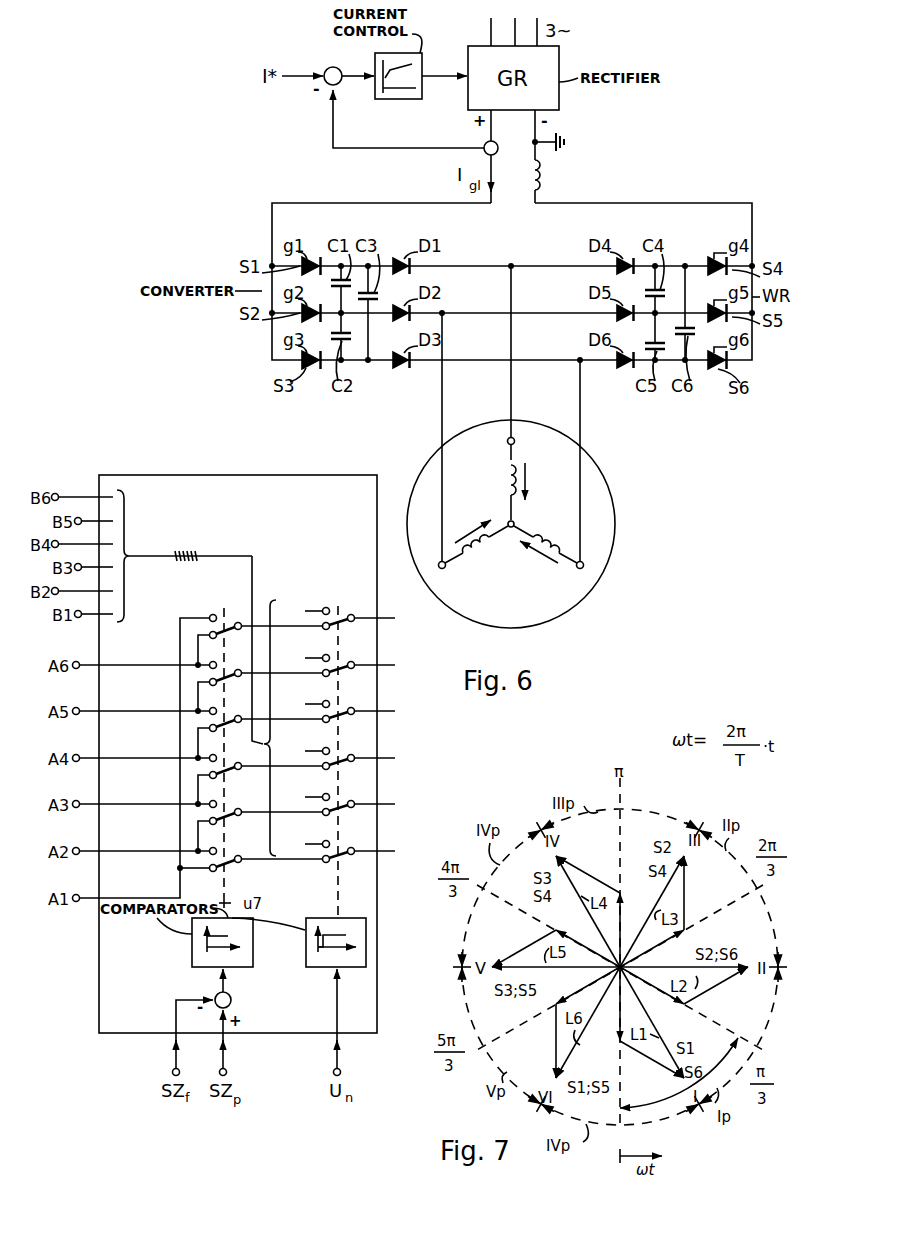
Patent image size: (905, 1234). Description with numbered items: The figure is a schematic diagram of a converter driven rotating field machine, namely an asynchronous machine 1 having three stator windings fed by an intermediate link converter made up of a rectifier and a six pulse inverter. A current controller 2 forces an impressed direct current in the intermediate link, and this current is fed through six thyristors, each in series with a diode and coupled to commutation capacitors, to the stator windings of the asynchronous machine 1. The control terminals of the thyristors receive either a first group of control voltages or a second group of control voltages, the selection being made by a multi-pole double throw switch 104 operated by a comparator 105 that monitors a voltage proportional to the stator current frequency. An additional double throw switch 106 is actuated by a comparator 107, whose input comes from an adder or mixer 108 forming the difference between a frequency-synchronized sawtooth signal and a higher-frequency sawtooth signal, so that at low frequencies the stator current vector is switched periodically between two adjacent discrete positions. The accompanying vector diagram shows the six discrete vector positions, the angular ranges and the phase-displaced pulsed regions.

The asynchronous machine 1 is at (614, 545).
The current controller 2 is at (397, 99).
The switch 104 is at (331, 862).
The comparator 105 is at (306, 956).
The double throw switch 106 is at (266, 758).
The comparator 107 is at (192, 956).
The adder or mixer 108 is at (240, 989).